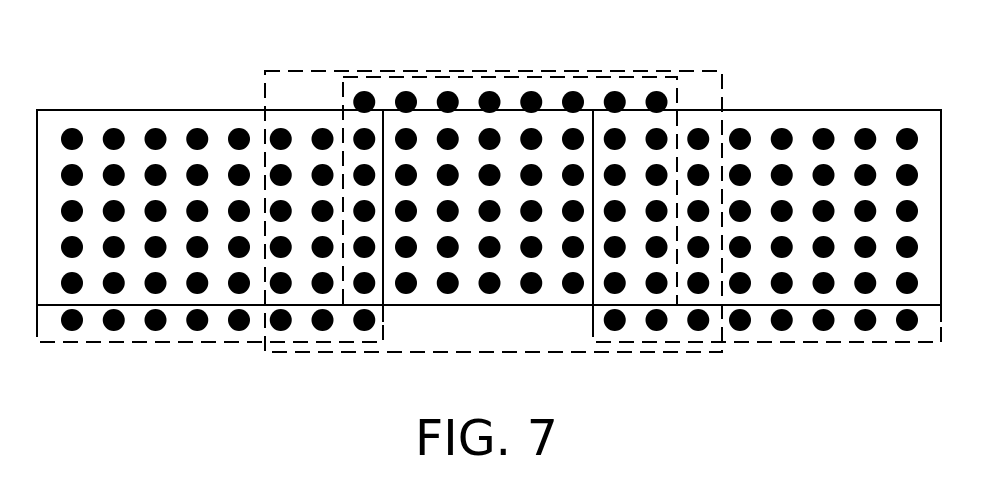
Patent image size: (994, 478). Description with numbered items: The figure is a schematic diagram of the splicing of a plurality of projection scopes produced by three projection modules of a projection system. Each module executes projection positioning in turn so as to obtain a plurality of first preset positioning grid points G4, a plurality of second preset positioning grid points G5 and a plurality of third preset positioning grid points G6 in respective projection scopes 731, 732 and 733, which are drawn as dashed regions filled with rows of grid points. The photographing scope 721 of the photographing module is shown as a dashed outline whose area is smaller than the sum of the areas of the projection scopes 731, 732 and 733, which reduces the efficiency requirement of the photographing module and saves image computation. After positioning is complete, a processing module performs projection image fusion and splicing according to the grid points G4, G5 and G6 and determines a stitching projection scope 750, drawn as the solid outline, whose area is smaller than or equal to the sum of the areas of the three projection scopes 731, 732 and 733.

The stitching projection scope 750 is at (895, 110).
The photographing scope 721 is at (630, 70).
The projection scope 732 is at (521, 72).
The projection scope 731 is at (220, 344).
The projection scope 733 is at (777, 344).
The first preset positioning grid points G4 is at (113, 127).
The second preset positioning grid points G5 is at (405, 90).
The third preset positioning grid points G6 is at (782, 127).